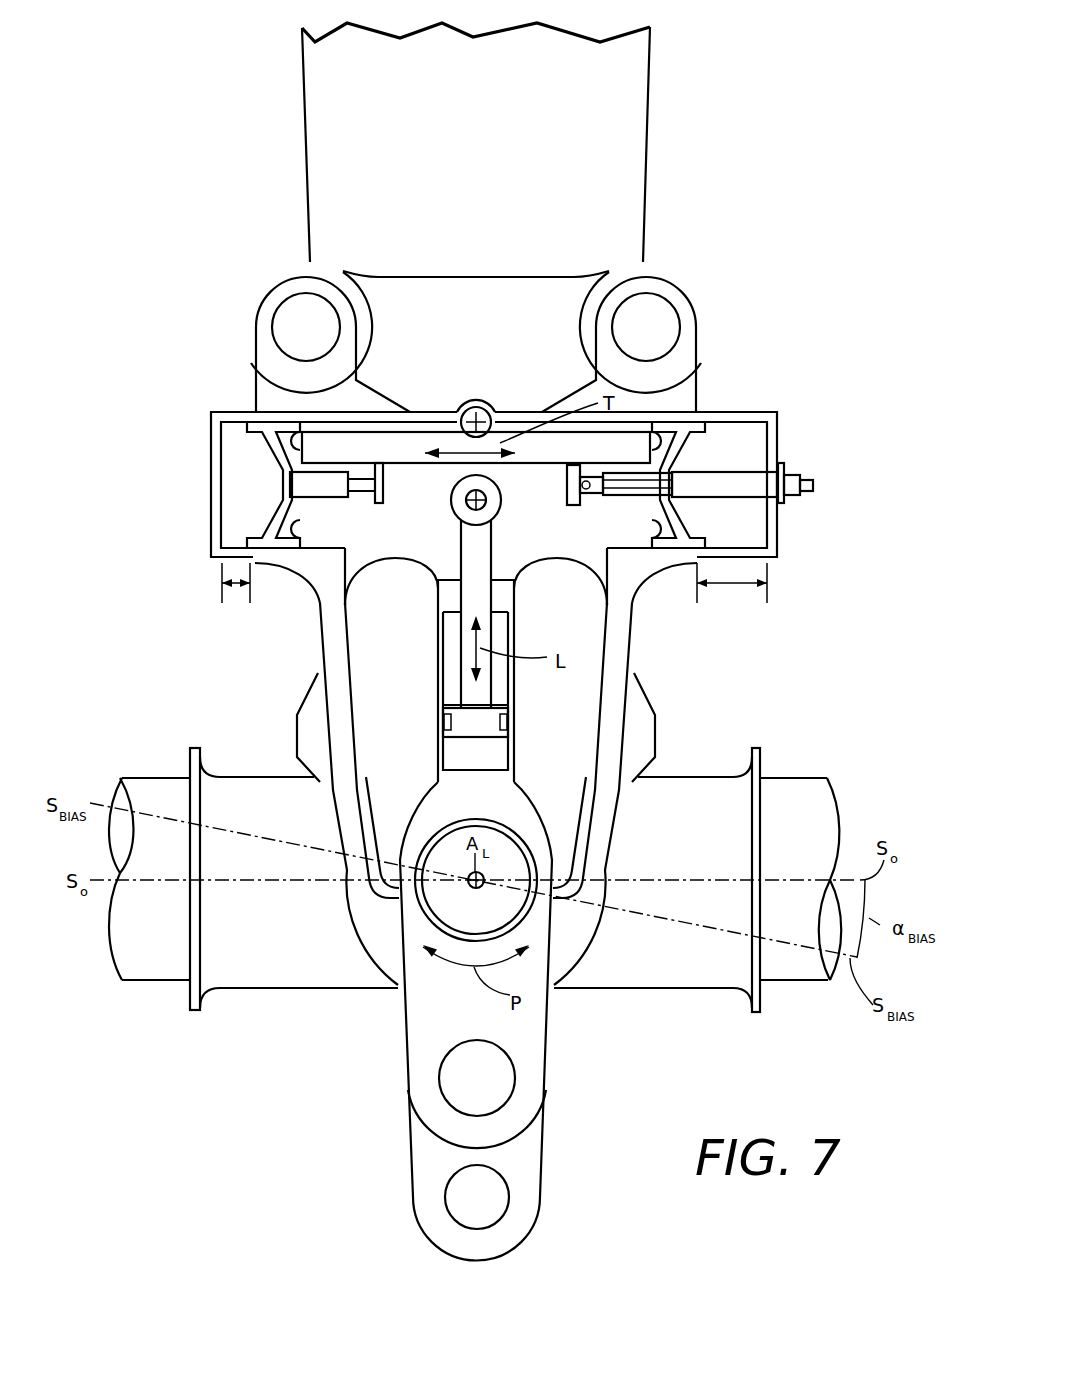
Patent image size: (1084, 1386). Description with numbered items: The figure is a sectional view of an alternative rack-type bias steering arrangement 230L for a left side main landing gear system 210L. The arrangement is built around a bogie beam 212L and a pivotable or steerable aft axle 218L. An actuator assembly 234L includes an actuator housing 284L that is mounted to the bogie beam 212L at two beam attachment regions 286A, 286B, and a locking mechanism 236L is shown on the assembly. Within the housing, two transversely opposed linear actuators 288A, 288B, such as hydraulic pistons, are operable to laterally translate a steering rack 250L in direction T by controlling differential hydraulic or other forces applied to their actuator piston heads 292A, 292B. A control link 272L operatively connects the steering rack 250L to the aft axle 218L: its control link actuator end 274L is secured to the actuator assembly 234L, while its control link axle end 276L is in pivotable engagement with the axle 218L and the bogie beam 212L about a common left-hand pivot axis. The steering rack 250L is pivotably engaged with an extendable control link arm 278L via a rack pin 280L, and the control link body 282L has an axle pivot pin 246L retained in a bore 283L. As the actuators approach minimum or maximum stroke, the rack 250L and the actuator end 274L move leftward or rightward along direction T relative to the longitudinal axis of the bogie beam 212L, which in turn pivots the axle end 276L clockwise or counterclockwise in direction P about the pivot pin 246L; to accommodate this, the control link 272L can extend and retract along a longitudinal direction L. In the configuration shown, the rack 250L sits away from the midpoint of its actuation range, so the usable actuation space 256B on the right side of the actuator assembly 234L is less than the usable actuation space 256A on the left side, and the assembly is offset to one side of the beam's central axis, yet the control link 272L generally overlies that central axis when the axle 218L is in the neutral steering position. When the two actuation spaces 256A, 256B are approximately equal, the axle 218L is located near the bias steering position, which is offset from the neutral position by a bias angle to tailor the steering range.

The left side main landing gear system 210L is at (742, 181).
The bogie beam 212L is at (300, 180).
The bogie beam attachment region 286A is at (258, 312).
The bogie beam attachment region 286B is at (707, 314).
The actuator assembly 234L is at (799, 381).
The locking mechanism 236L is at (494, 408).
The actuator 288A is at (234, 488).
The actuator 288B is at (740, 456).
The actuator piston head 292A is at (277, 522).
The actuator piston head 292B is at (690, 519).
The steering rack 250L is at (423, 503).
The rack pin 280L is at (500, 500).
The actuation space 256A is at (236, 590).
The actuation space 256B is at (738, 590).
The control link arm 278L is at (473, 568).
The control link actuator end 274L is at (500, 568).
The control link 272L is at (524, 771).
The control link body 282L is at (498, 800).
The actuator housing 284L is at (310, 565).
The bias steering arrangement 230L is at (277, 611).
The axle 218L is at (163, 749).
The control link axle end 276L is at (396, 993).
The axle pivot pin 246L is at (512, 853).
The bore 283L is at (418, 910).